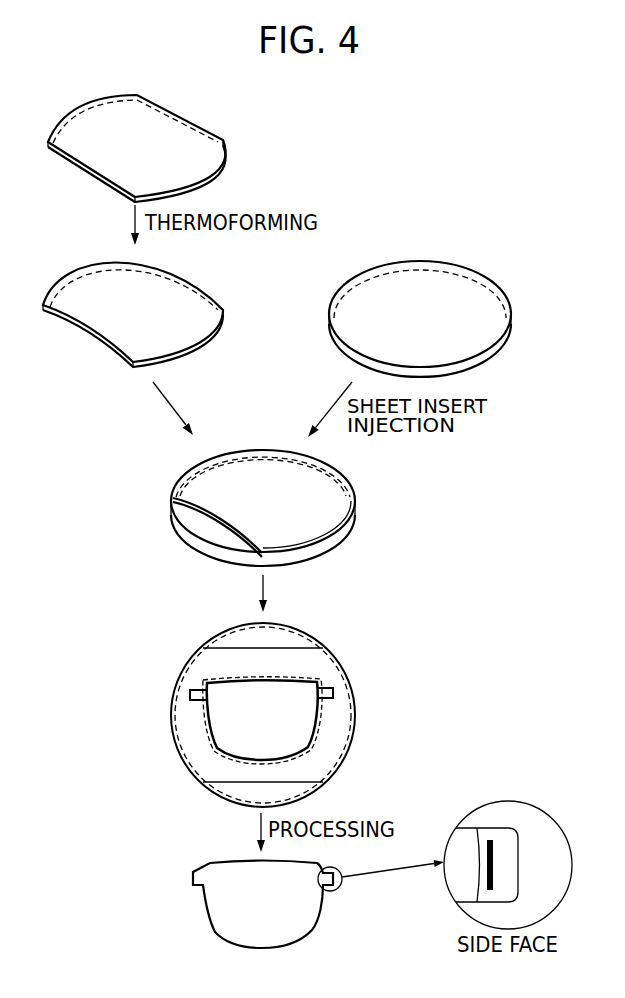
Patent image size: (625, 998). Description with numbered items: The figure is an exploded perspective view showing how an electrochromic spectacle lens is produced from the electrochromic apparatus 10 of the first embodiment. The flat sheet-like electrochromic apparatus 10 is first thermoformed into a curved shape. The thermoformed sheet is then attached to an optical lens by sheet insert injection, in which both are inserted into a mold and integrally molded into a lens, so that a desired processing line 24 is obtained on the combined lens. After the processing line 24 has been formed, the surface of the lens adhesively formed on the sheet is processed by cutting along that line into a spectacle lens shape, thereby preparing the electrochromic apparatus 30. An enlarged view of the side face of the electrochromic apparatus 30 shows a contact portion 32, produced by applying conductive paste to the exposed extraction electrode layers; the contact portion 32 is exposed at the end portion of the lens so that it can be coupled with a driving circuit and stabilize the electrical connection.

The electrochromic apparatus 10 is at (137, 141).
The processing line 24 is at (290, 675).
The electrochromic apparatus 30 is at (232, 868).
The contact portion 32 is at (490, 840).